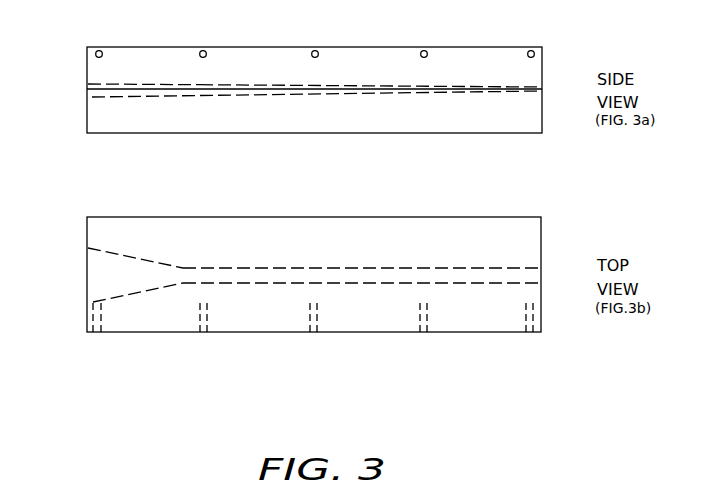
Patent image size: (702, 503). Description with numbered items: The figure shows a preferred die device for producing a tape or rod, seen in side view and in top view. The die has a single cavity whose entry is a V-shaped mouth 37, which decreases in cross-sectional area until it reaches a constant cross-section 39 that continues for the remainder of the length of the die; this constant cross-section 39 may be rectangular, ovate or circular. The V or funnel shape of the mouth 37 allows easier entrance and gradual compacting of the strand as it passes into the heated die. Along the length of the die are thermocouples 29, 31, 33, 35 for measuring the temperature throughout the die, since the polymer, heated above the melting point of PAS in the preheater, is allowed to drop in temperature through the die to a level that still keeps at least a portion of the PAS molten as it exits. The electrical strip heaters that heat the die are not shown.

In FIG. 3a, the thermocouple 29 is at (97, 49).
In FIG. 3b, the thermocouple 29 is at (97, 333).
In FIG. 3a, the thermocouple 31 is at (203, 49).
In FIG. 3b, the thermocouple 31 is at (204, 333).
In FIG. 3a, the thermocouple 33 is at (315, 49).
In FIG. 3b, the thermocouple 33 is at (314, 333).
In FIG. 3a, the thermocouple 35 is at (531, 49).
In FIG. 3b, the thermocouple 35 is at (530, 333).
In FIG. 3a, the V-shaped mouth 37 is at (88, 89).
In FIG. 3b, the V-shaped mouth 37 is at (87, 279).
In FIG. 3a, the constant cross-section 39 is at (541, 89).
In FIG. 3b, the constant cross-section 39 is at (541, 275).